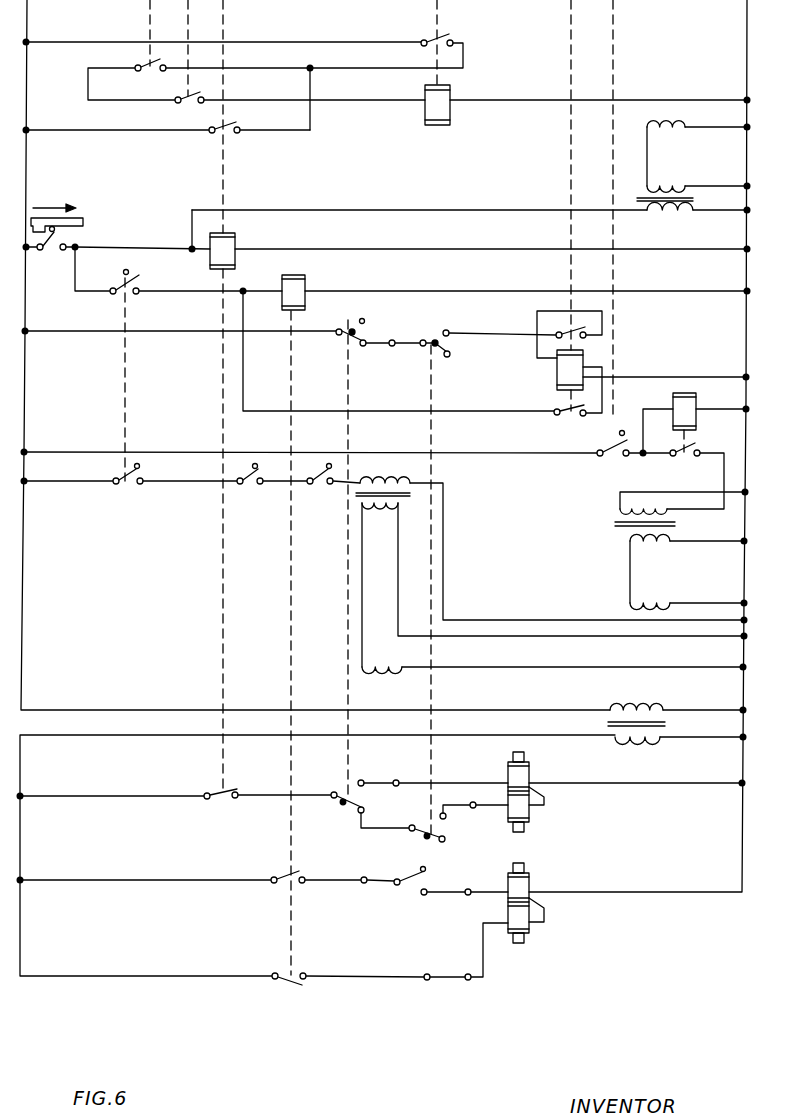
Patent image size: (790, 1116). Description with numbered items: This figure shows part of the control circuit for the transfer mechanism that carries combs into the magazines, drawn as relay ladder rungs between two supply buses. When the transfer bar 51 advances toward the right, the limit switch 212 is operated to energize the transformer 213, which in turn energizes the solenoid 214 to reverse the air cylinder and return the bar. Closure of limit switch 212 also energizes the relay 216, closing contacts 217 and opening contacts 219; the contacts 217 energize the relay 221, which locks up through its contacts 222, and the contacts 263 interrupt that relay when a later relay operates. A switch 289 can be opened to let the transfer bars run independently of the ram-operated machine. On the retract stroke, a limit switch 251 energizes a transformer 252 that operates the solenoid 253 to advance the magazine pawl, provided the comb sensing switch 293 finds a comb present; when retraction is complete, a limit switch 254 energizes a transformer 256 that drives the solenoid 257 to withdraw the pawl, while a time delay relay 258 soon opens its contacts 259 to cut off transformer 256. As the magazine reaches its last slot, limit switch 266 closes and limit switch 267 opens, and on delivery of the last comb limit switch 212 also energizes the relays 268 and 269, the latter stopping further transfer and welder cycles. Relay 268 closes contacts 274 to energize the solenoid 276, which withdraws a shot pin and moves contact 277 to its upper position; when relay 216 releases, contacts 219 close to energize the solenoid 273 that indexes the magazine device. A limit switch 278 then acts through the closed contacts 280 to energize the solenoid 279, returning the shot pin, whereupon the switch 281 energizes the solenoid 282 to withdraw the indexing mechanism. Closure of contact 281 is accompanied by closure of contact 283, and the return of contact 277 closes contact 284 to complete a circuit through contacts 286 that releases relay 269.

The transfer bar 51 is at (82, 219).
The limit switch 212 is at (58, 246).
The transformer 213 is at (640, 203).
The solenoid 214 is at (661, 128).
The relay 216 is at (234, 249).
The contacts 217 is at (226, 128).
The contacts 219 is at (221, 798).
The relay 221 is at (425, 117).
The contacts 222 is at (433, 36).
The limit switch 251 is at (250, 484).
The transformer 252 is at (400, 498).
The solenoid 253 is at (400, 675).
The limit switch 254 is at (613, 451).
The transformer 256 is at (623, 526).
The solenoid 257 is at (628, 605).
The time delay relay 258 is at (684, 405).
The contacts 259 is at (684, 457).
The contacts 263 is at (186, 97).
The limit switch 266 is at (140, 275).
The limit switch 267 is at (133, 484).
The relay 268 is at (300, 293).
The relay 269 is at (564, 374).
The solenoid 273 is at (523, 778).
The contacts 274 is at (296, 987).
The solenoid 276 is at (522, 931).
The contact 277 is at (353, 808).
The limit switch 278 is at (423, 876).
The solenoid 279 is at (523, 886).
The contacts 280 is at (295, 884).
The switch 281 is at (425, 838).
The solenoid 282 is at (522, 817).
The contact 283 is at (436, 346).
The contact 284 is at (360, 333).
The contacts 286 is at (586, 331).
The switch 289 is at (146, 63).
The comb sensing switch 293 is at (322, 484).